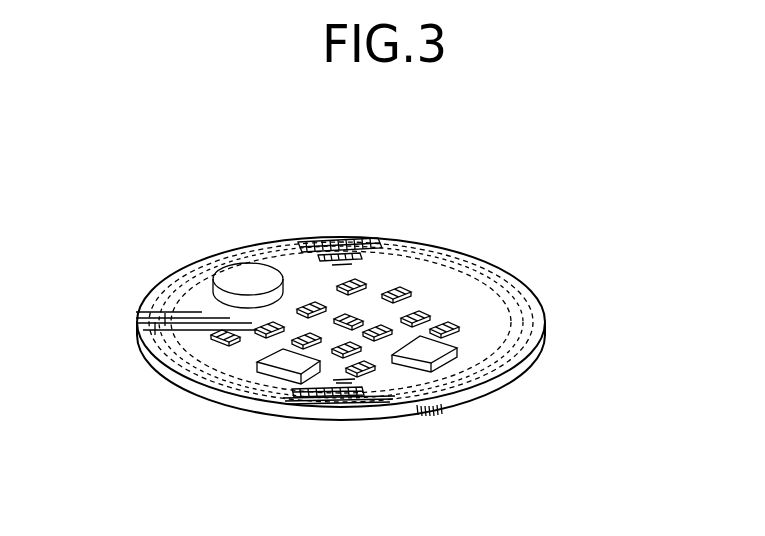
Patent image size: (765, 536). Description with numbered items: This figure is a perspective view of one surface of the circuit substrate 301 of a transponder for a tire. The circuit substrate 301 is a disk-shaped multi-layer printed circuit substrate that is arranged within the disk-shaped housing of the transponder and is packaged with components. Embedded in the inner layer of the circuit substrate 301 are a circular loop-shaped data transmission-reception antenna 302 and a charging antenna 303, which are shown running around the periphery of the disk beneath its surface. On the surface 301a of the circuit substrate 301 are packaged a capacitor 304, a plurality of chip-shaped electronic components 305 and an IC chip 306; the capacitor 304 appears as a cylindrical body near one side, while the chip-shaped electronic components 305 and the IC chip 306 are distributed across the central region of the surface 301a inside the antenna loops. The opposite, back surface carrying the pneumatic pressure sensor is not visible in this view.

The circuit substrate 301 is at (187, 399).
The surface 301a is at (440, 292).
The data transmission-reception antenna 302 is at (300, 238).
The charging antenna 303 is at (400, 240).
The capacitor 304 is at (237, 280).
The chip-shaped electronic components 305 is at (212, 334).
The IC chip 306 is at (333, 397).